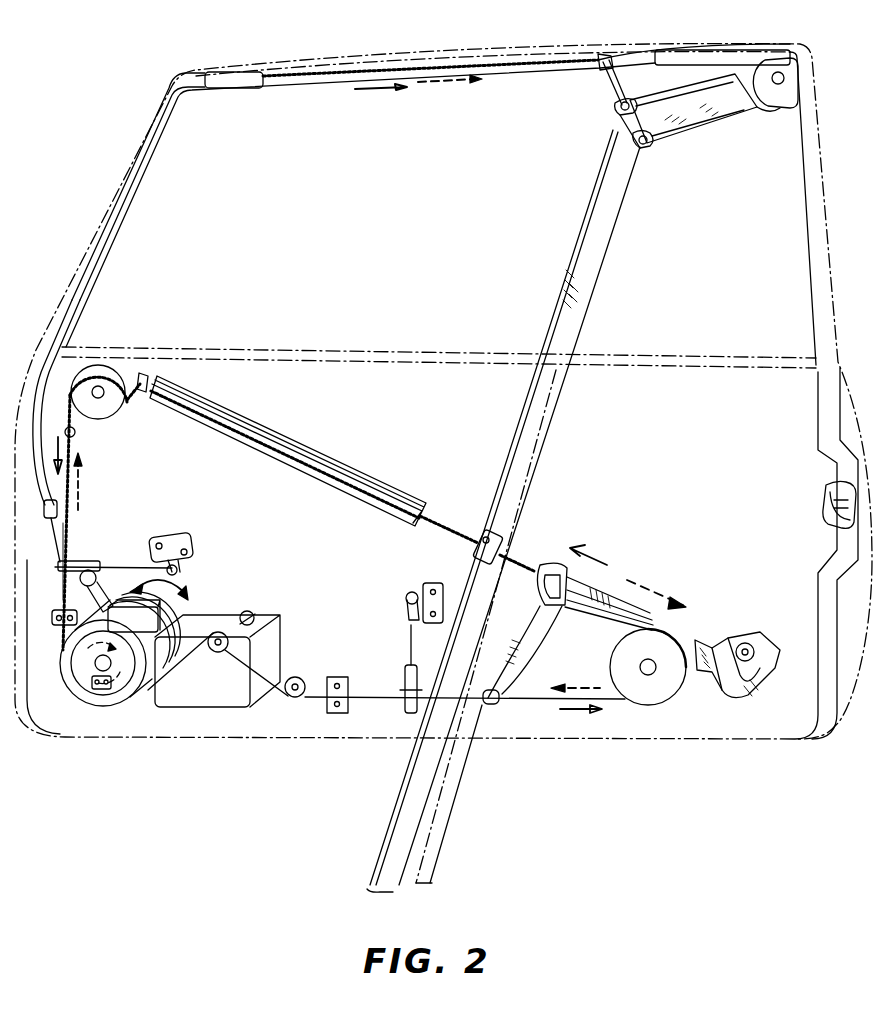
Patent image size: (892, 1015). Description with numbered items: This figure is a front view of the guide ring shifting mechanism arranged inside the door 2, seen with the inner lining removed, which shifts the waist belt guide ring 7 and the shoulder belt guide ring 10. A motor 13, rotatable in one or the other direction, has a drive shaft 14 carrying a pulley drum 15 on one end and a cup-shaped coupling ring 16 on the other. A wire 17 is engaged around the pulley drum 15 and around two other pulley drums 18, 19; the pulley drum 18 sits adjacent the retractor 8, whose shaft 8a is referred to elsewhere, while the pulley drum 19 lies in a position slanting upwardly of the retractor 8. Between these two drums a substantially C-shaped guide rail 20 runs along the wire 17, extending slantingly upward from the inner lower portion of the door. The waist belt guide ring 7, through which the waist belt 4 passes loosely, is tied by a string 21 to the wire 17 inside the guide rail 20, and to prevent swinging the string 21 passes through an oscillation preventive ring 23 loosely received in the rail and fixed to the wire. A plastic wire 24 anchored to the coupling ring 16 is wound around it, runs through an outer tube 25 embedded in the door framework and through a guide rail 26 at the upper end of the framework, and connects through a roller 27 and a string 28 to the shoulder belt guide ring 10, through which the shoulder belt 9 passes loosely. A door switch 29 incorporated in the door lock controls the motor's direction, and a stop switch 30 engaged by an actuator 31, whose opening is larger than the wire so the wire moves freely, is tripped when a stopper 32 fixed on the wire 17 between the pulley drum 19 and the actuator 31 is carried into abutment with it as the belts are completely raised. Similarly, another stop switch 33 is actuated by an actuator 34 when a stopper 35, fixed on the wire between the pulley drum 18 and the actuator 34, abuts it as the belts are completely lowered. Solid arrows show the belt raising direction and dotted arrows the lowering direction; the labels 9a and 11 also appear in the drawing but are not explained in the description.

The door 2 is at (822, 187).
The waist belt 4 is at (456, 792).
The waist belt guide ring 7 is at (548, 563).
The retractor 8 is at (742, 700).
The shaft of the retractor 8a is at (742, 642).
The shoulder belt 9 is at (603, 258).
The link arm 9a is at (716, 115).
The shoulder belt guide ring 10 is at (612, 116).
The upper hinge 11 is at (741, 70).
The motor 13 is at (218, 702).
The drive shaft 14 is at (98, 670).
The pulley drum 15 is at (118, 700).
The coupling ring 16 is at (176, 598).
The wire 17 is at (53, 600).
The pulley drum 18 is at (656, 705).
The pulley drum 19 is at (99, 378).
The guide rail 20 is at (323, 448).
The string 21 is at (516, 585).
The oscillation preventive ring 23 is at (485, 536).
The plastic wire 24 is at (50, 517).
The outer tube 25 is at (37, 378).
The guide rail 26 is at (237, 68).
The roller 27 is at (604, 56).
The string 28 is at (604, 84).
The door switch 29 is at (823, 504).
The stop switch 30 is at (170, 535).
The actuator 31 is at (92, 562).
The stopper 32 is at (75, 433).
The stop switch 33 is at (428, 585).
The actuator 34 is at (404, 680).
The stopper 35 is at (492, 706).